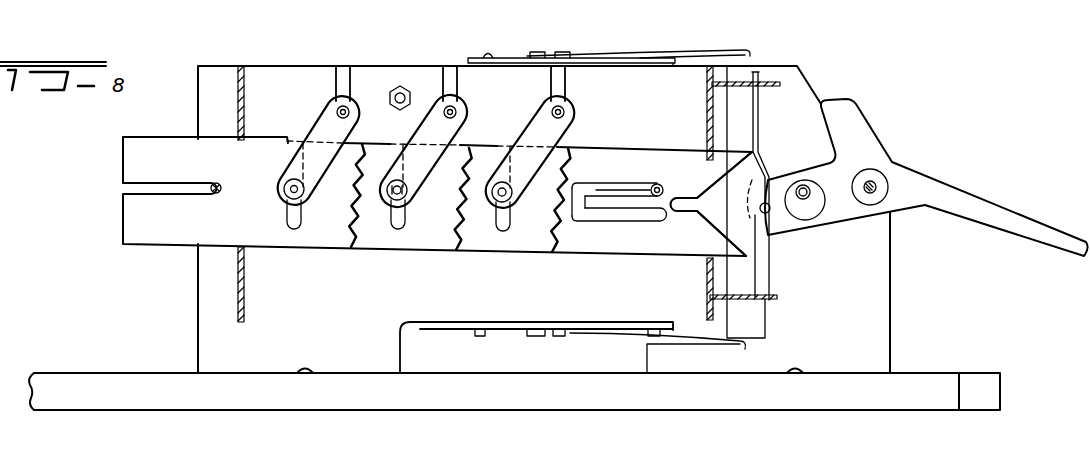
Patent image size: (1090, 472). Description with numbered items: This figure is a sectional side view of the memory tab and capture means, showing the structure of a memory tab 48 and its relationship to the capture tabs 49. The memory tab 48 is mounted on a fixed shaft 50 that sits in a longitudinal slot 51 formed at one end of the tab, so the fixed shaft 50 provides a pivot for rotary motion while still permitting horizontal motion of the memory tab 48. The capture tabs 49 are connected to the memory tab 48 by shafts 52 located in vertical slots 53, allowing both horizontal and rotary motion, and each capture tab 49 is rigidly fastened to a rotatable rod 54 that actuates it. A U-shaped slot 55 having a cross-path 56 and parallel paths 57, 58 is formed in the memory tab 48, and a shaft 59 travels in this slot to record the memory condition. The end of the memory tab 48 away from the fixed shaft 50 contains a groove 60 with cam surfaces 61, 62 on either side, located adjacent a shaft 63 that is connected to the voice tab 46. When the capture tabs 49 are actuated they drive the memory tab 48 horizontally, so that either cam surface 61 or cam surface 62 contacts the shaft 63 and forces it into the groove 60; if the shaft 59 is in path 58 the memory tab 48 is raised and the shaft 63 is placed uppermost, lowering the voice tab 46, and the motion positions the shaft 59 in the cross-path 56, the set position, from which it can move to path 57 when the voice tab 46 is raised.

The voice tab 46 is at (952, 203).
The memory tab 48 is at (395, 193).
The capture tab 49 is at (440, 106).
The fixed shaft 50 is at (218, 184).
The longitudinal slot 51 is at (133, 186).
The shaft 52 is at (297, 193).
The vertical slot 53 is at (405, 238).
The rotatable rod 54 is at (546, 108).
The U-shaped slot 55 is at (570, 215).
The cross-path 56 is at (582, 192).
The parallel path 57 is at (613, 190).
The parallel path 58 is at (578, 222).
The shaft 59 is at (660, 184).
The groove 60 is at (683, 206).
The cam surface 61 is at (724, 178).
The cam surface 62 is at (722, 233).
The shaft 63 is at (769, 213).